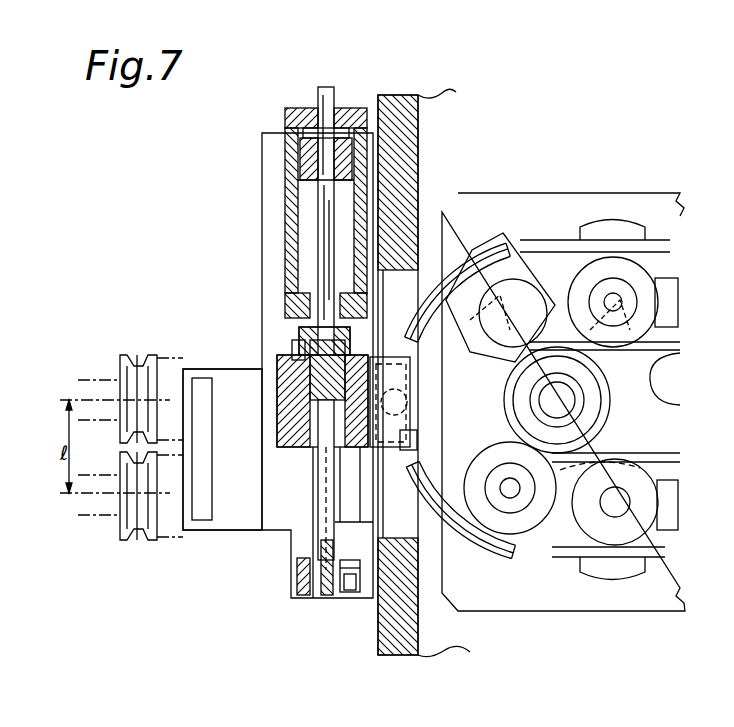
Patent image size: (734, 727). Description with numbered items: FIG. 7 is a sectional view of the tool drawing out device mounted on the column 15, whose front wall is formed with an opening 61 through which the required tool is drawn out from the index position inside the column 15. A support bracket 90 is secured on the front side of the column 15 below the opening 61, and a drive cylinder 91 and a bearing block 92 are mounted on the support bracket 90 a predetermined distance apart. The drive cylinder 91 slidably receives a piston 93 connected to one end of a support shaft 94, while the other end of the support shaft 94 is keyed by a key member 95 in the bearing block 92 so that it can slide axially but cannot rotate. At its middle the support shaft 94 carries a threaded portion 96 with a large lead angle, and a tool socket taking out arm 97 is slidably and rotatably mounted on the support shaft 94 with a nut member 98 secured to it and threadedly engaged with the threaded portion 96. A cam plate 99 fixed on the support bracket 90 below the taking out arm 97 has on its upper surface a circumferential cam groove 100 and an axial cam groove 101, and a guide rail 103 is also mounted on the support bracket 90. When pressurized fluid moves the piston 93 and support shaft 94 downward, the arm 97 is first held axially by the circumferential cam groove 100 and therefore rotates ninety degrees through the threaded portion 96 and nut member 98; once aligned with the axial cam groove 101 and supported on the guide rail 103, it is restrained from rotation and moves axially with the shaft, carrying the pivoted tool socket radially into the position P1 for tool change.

The column 15 is at (394, 110).
The opening 61 is at (413, 268).
The support bracket 90 is at (270, 279).
The drive cylinder 91 is at (288, 240).
The bearing block 92 is at (298, 580).
The piston 93 is at (300, 162).
The support shaft 94 is at (330, 475).
The key member 95 is at (350, 588).
The threaded portion 96 is at (300, 350).
The tool socket taking out arm 97 is at (288, 430).
The nut member 98 is at (292, 378).
The cam plate 99 is at (272, 506).
The circumferential cam groove 100 is at (290, 398).
The axial cam groove 101 is at (393, 475).
The guide rail 103 is at (200, 512).
The position P1 is at (108, 508).